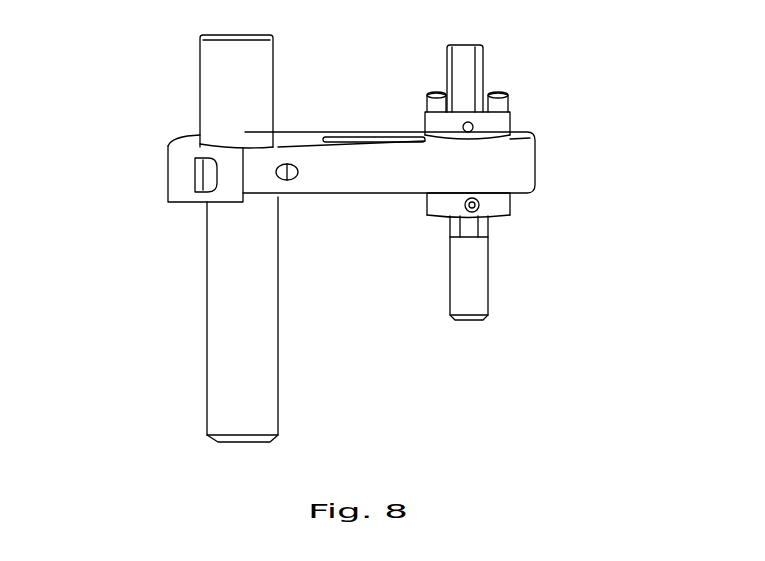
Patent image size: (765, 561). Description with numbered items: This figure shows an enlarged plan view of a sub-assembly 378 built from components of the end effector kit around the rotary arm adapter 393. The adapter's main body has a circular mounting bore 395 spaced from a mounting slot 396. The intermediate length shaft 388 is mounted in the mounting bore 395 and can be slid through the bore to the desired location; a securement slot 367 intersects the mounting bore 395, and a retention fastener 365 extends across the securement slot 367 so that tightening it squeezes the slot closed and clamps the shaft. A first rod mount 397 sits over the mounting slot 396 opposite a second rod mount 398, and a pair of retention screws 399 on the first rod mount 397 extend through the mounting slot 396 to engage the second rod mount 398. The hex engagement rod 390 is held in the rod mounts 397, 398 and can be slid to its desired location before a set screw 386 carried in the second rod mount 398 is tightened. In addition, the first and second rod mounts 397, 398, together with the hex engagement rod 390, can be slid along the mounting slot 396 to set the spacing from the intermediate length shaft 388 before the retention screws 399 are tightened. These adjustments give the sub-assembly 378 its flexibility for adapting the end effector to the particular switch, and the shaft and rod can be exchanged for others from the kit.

The sub-assembly 378 is at (146, 63).
The rotary arm adapter 393 is at (537, 157).
The mounting slot 396 is at (370, 135).
The mounting bore 395 is at (220, 143).
The securement slot 367 is at (243, 185).
The retention fastener 365 is at (195, 174).
The intermediate length shaft 388 is at (207, 318).
The first rod mount 397 is at (513, 125).
The retention screws 399 is at (498, 92).
The second rod mount 398 is at (512, 200).
The set screw 386 is at (435, 208).
The hex engagement rod 390 is at (488, 298).